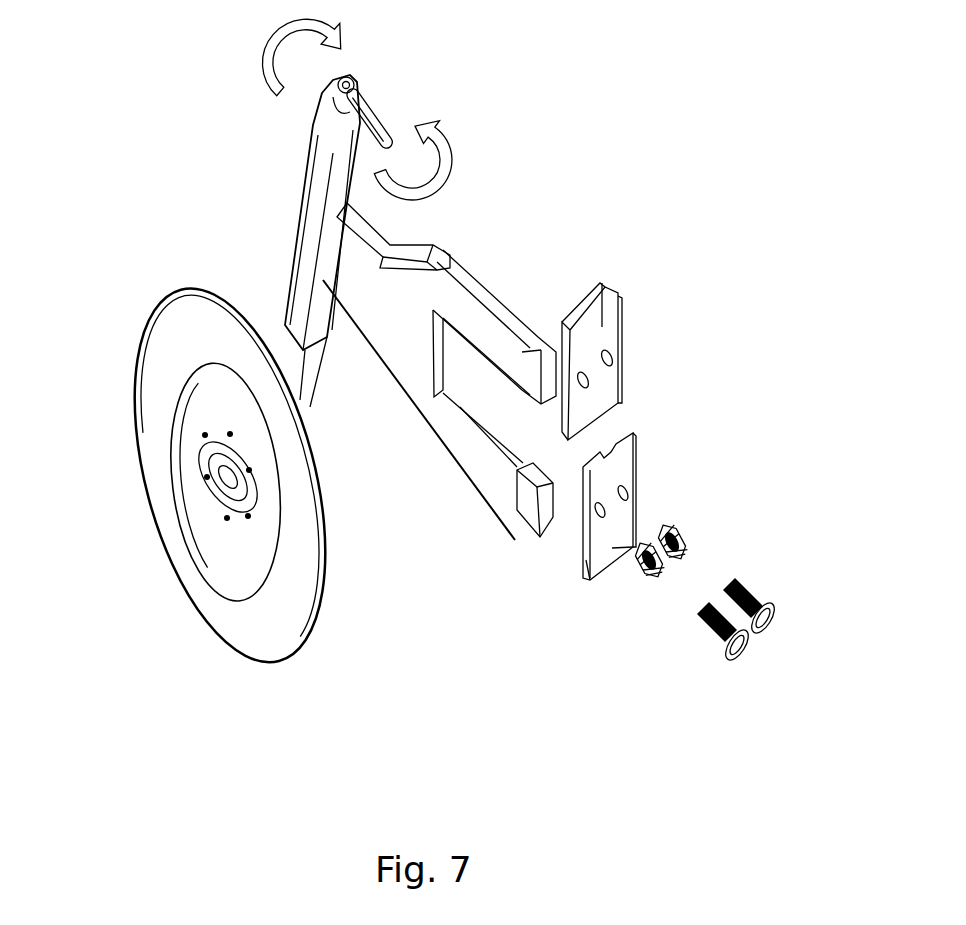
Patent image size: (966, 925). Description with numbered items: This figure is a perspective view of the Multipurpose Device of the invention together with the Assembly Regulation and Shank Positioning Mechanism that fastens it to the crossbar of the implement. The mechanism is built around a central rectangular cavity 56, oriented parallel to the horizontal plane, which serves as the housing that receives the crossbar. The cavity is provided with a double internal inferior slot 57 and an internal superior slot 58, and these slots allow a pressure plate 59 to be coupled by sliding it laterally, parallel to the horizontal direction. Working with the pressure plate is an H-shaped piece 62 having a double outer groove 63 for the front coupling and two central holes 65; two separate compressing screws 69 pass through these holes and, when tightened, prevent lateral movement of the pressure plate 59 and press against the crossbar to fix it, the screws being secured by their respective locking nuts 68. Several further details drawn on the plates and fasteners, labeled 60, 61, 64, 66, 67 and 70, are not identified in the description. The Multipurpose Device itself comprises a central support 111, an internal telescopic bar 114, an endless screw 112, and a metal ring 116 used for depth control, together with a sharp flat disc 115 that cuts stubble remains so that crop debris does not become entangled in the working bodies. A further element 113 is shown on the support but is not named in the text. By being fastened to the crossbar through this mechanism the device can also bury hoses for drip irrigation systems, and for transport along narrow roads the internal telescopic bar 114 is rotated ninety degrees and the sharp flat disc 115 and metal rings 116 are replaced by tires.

The central rectangular cavity 56 is at (460, 387).
The double internal inferior slot 57 is at (523, 480).
The internal superior slot 58 is at (520, 383).
The pressure plate 59 is at (602, 283).
The hole 60 is at (611, 360).
The hole 61 is at (587, 380).
The H-shaped piece 62 is at (597, 562).
The double outer groove 63 is at (617, 453).
The plate bottom edge 64 is at (617, 547).
The central holes 65 is at (590, 545).
The hole 66 is at (627, 492).
The nut 67 is at (645, 580).
The locking nuts 68 is at (682, 530).
The compressing screws 69 is at (732, 662).
The bolt 70 is at (773, 622).
The central support 111 is at (450, 260).
The endless screw 112 is at (354, 89).
The post 113 is at (322, 160).
The internal telescopic bar 114 is at (310, 407).
The sharp flat disc 115 is at (178, 310).
The metal ring 116 is at (183, 535).